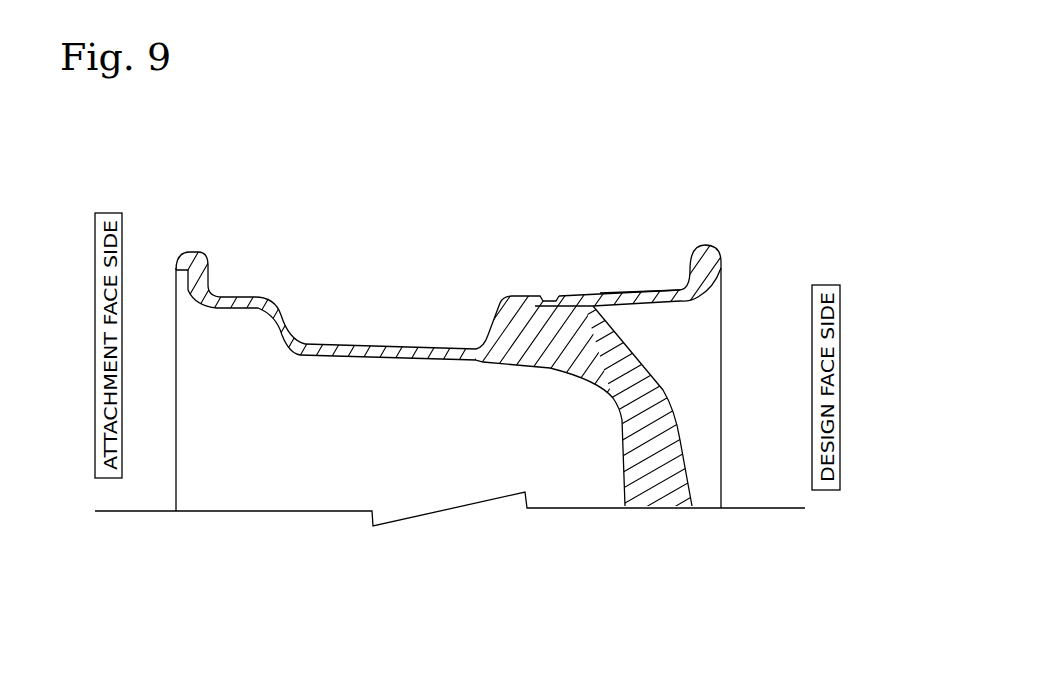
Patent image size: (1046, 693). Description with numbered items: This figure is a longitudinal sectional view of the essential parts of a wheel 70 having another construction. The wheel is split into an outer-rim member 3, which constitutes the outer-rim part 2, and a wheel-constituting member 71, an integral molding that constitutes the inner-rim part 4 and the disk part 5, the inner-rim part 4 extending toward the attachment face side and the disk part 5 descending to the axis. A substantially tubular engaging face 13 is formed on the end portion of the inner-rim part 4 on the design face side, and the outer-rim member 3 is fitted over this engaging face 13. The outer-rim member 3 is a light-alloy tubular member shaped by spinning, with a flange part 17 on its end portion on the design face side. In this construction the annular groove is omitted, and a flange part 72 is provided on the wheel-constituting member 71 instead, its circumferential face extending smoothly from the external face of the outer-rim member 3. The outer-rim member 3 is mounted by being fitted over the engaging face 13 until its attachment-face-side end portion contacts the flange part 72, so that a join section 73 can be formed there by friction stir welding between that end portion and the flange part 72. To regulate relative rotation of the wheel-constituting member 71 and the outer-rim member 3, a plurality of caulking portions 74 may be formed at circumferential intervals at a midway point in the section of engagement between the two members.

The outer-rim part 2 is at (626, 291).
The outer-rim member 3 is at (744, 255).
The inner-rim part 4 is at (350, 343).
The disk part 5 is at (670, 386).
The engaging face 13 is at (576, 296).
The flange part 17 is at (707, 244).
The wheel 70 is at (673, 220).
The wheel-constituting member 71 is at (302, 290).
The flange part 72 is at (503, 307).
The join section 73 is at (528, 295).
The caulking portions 74 is at (553, 299).